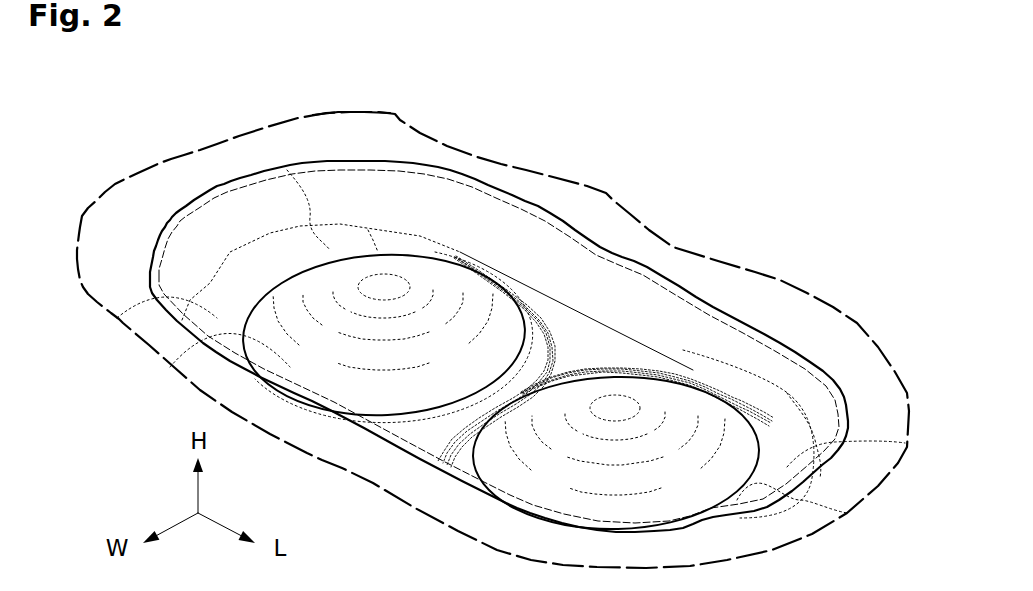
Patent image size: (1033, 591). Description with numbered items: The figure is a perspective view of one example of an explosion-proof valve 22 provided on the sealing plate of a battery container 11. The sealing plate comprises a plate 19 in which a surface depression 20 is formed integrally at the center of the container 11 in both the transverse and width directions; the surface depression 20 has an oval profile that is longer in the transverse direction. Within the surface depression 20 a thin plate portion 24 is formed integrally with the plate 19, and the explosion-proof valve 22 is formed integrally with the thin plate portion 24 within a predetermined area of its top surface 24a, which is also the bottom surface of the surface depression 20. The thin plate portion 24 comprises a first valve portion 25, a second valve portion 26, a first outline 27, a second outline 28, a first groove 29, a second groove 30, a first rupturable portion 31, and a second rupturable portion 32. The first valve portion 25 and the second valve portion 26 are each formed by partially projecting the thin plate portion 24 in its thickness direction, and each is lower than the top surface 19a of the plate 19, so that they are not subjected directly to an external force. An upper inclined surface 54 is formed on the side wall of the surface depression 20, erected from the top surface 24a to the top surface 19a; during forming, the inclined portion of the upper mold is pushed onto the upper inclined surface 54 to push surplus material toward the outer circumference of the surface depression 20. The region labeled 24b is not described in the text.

The container 11 is at (818, 257).
The plate 19 is at (400, 120).
The top surface of the plate 19a is at (288, 142).
The surface depression 20 is at (177, 210).
The explosion-proof valve 22 is at (595, 277).
The thin plate portion 24 is at (226, 288).
The top surface of the thin plate portion 24a is at (117, 318).
The second wall portion 24b is at (368, 230).
The first valve portion 25 is at (383, 287).
The second valve portion 26 is at (617, 407).
The first outline 27 is at (170, 367).
The second outline 28 is at (847, 513).
The first groove 29 is at (457, 257).
The second groove 30 is at (687, 367).
The first rupturable portion 31 is at (282, 169).
The second rupturable portion 32 is at (905, 443).
The upper inclined surface 54 is at (787, 395).